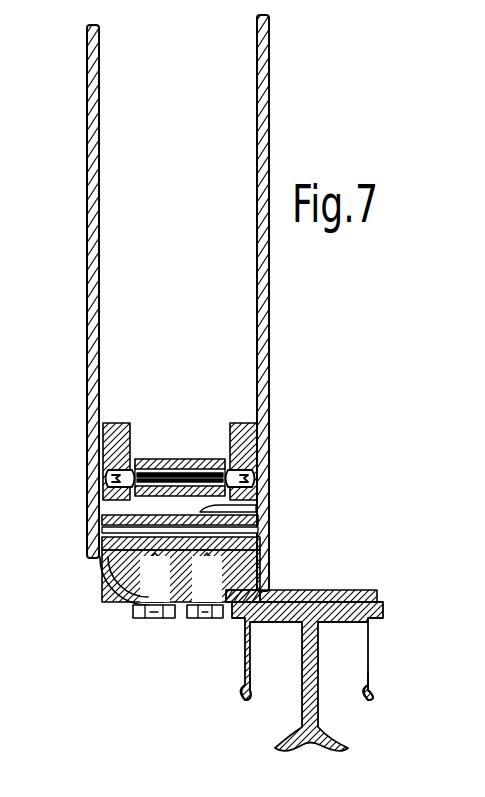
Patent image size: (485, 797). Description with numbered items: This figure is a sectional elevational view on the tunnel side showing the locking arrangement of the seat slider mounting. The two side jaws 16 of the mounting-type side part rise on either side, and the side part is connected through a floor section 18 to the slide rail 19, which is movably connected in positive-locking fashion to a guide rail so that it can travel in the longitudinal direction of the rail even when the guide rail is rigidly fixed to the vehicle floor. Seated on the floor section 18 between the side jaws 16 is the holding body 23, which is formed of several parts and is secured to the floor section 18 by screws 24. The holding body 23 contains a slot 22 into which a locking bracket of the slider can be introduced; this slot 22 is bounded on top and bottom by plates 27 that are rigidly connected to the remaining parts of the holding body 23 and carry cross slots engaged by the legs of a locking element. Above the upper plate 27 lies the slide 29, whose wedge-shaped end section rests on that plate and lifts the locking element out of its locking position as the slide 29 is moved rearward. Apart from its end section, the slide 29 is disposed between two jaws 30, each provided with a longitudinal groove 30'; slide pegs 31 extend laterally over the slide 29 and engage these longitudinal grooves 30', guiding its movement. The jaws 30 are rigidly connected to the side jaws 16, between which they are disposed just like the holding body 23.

The side jaws 16 is at (93, 212).
The floor section 18 is at (352, 590).
The slide rail 19 is at (378, 672).
The slot 22 is at (103, 562).
The holding body 23 is at (243, 565).
The screws 24 is at (200, 620).
The plates 27 is at (258, 508).
The slide 29 is at (170, 462).
The jaws 30 is at (184, 461).
The longitudinal groove 30' is at (192, 498).
The slide pegs 31 is at (108, 518).